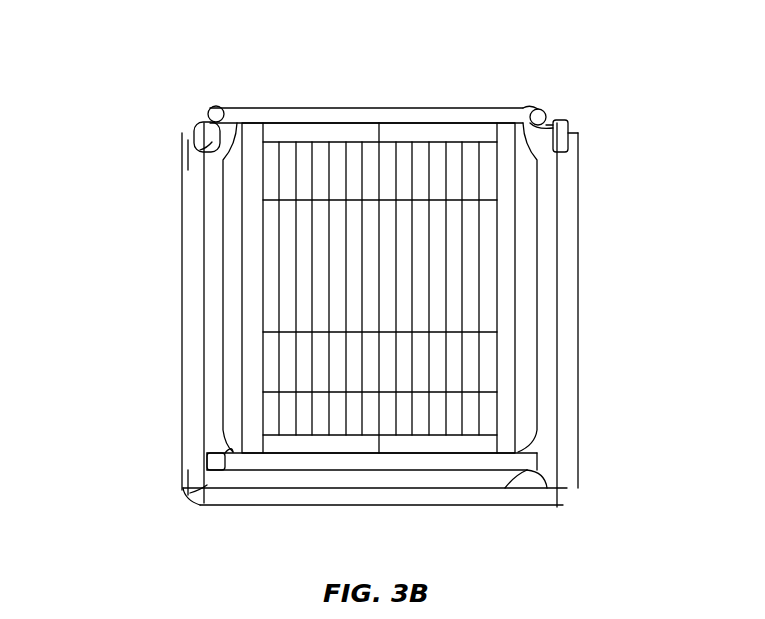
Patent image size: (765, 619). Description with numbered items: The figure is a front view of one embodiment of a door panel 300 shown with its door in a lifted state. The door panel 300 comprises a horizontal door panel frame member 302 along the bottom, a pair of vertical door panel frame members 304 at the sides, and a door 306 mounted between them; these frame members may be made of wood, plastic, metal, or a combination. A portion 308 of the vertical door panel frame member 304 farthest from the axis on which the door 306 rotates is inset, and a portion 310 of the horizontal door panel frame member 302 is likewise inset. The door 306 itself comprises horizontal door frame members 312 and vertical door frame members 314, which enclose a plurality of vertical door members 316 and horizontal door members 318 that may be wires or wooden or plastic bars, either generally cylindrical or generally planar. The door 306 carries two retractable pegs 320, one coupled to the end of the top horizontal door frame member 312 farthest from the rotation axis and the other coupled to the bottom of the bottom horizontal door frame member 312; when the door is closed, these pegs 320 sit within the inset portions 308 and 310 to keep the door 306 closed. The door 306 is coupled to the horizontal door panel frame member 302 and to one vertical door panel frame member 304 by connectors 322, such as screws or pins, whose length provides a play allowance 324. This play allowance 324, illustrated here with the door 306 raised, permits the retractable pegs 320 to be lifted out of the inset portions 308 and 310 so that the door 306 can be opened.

The door panel 300 is at (152, 60).
The horizontal door panel frame member 302 is at (253, 507).
The vertical door panel frame member 304 is at (197, 218).
The door 306 is at (214, 250).
The inset portion 308 is at (528, 116).
The inset portion 310 is at (500, 488).
The horizontal door frame member 312 is at (413, 108).
The vertical door frame member 314 is at (222, 289).
The vertical door member 316 is at (280, 334).
The horizontal door member 318 is at (290, 392).
The retractable peg 320 is at (552, 120).
The connector 322 is at (207, 152).
The play allowance 324 is at (205, 131).